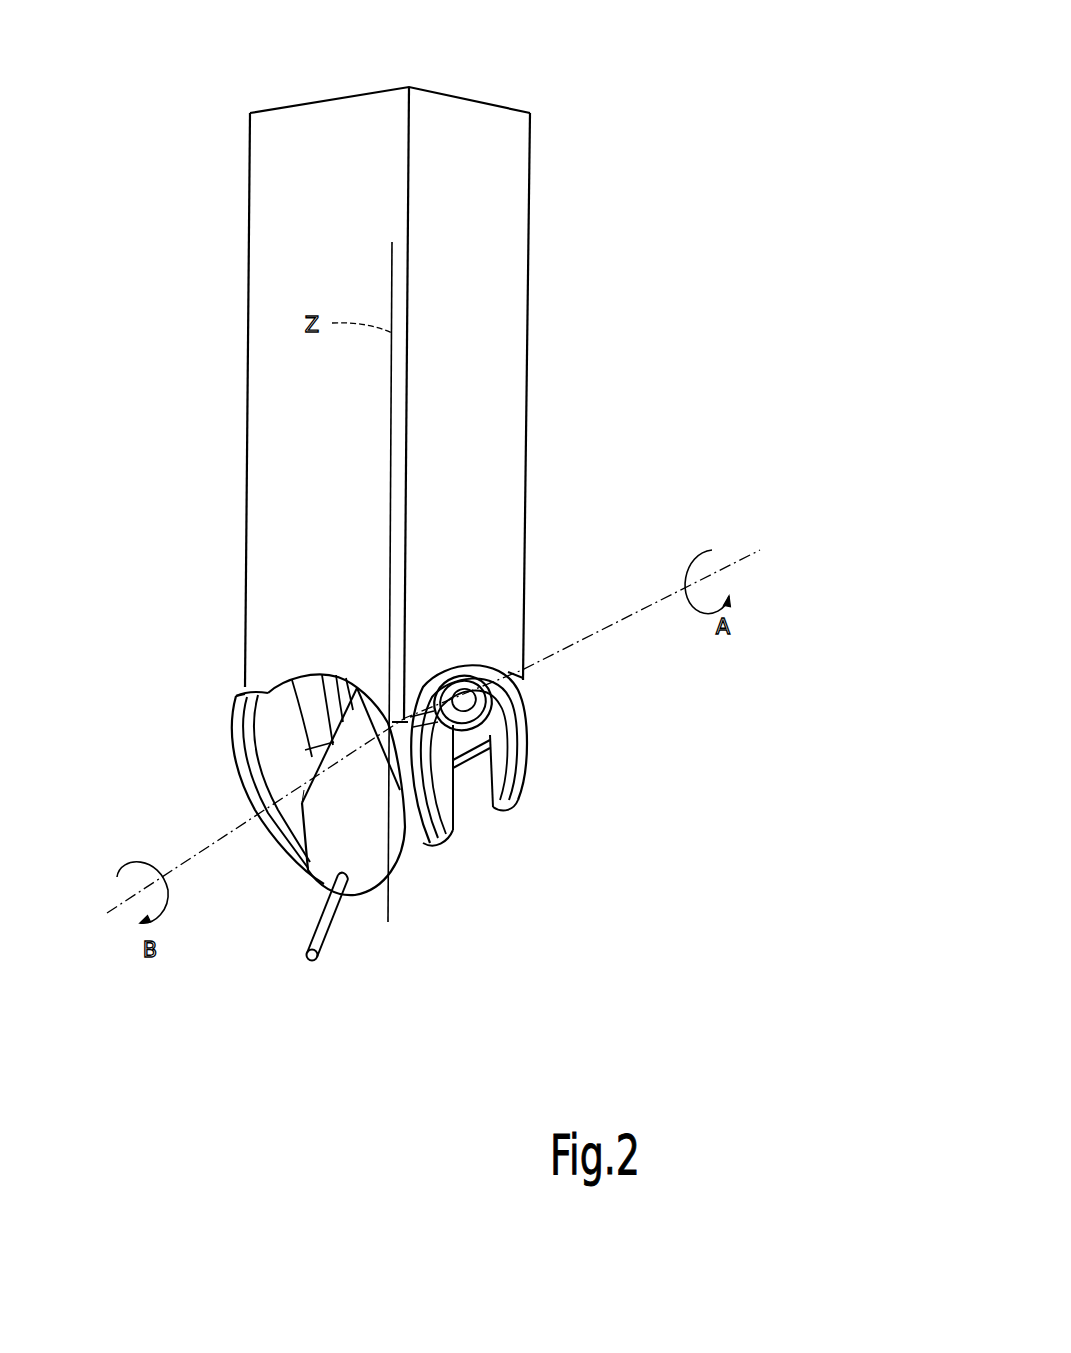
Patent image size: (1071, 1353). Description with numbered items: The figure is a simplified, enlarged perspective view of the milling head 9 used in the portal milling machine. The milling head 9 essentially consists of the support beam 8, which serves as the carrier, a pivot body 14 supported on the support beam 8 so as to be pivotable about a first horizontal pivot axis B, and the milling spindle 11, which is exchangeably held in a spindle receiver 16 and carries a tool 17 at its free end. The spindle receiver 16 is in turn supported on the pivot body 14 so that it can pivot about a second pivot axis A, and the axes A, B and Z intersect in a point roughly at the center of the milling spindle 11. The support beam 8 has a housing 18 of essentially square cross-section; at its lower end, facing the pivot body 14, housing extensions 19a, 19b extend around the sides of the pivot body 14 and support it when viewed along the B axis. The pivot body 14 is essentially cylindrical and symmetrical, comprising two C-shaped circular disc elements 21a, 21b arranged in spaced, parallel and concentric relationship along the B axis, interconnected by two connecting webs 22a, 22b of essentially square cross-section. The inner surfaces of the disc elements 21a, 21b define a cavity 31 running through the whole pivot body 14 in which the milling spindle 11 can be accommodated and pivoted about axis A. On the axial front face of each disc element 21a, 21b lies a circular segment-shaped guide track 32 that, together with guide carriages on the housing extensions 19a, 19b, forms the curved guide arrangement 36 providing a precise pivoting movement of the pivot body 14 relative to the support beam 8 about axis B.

The support beam 8 is at (558, 190).
The milling head 9 is at (698, 168).
The milling spindle 11 is at (391, 953).
The pivot body 14 is at (214, 705).
The spindle receiver 16 is at (400, 850).
The tool 17 is at (307, 935).
The housing 18 is at (530, 342).
The housing extension 19a is at (280, 682).
The housing extension 19b is at (522, 674).
The disc element 21a is at (455, 828).
The disc element 21b is at (530, 780).
The connecting web 22a is at (522, 737).
The connecting web 22b is at (312, 757).
The cavity 31 is at (295, 775).
The guide track 32 is at (280, 850).
The curved guide arrangement 36 is at (240, 687).